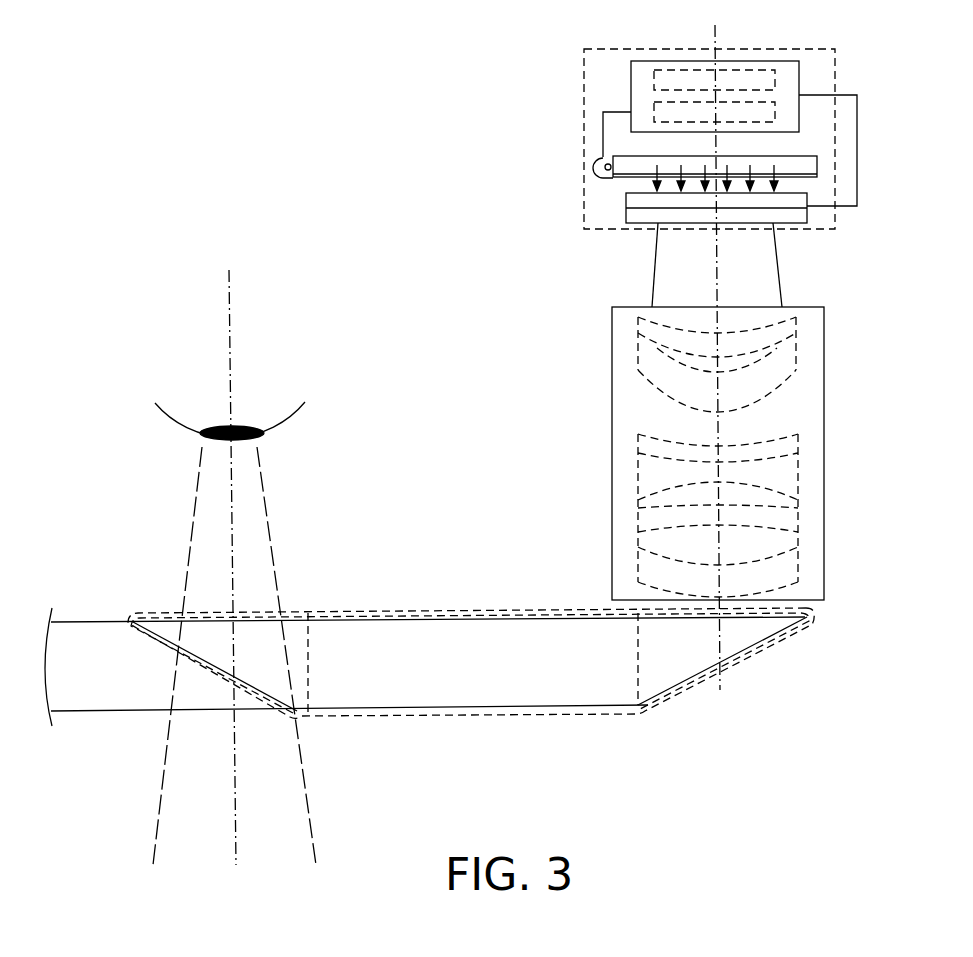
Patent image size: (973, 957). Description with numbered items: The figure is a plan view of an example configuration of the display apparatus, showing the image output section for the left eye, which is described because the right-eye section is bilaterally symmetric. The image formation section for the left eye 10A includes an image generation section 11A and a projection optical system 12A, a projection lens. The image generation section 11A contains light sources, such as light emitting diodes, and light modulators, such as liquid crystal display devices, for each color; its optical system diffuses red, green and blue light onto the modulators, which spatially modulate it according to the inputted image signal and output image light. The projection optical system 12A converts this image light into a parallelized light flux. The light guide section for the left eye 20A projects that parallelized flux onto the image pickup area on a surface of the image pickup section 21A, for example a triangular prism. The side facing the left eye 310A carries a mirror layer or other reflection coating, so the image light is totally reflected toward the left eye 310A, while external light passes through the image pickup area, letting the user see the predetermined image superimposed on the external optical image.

The image formation section for the left eye 10A is at (866, 37).
The image generation section 11A is at (583, 93).
The projection optical system 12A is at (587, 442).
The light guide section for the left eye 20A is at (493, 728).
The image pickup section 21A is at (218, 675).
The left eye 310A is at (170, 423).